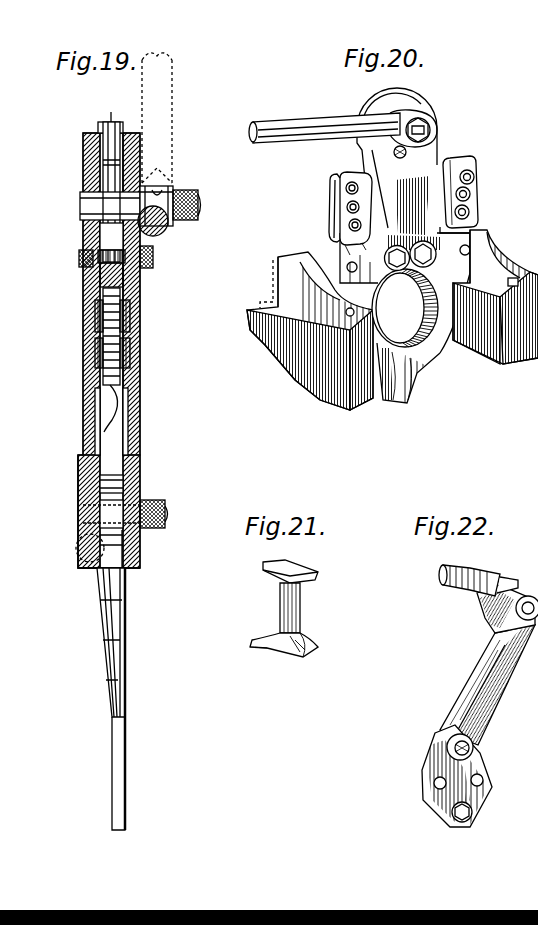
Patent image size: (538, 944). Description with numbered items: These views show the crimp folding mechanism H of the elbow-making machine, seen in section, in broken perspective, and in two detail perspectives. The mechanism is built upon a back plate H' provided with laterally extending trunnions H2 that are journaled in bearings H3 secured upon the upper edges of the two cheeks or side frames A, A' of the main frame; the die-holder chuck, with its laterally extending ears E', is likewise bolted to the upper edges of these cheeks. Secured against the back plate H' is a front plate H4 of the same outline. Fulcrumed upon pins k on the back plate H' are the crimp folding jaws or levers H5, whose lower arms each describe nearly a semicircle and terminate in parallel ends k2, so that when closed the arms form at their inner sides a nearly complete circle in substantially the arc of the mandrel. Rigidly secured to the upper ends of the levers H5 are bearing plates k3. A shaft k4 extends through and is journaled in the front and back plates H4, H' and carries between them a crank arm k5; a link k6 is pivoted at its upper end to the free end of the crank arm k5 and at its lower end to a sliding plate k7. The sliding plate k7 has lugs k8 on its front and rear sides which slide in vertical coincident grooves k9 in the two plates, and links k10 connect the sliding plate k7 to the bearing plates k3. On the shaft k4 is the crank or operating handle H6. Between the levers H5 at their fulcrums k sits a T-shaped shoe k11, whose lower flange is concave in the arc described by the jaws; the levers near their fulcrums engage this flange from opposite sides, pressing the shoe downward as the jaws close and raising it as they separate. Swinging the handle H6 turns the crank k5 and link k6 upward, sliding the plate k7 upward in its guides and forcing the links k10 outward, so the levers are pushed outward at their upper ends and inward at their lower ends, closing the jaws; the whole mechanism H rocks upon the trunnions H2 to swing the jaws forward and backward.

In FIG. 20, the crimp folding mechanism H is at (422, 220).
In FIG. 19, the back plate H' is at (86, 350).
In FIG. 19, the trunnions H2 is at (86, 499).
In FIG. 20, the trunnions H2 is at (302, 247).
In FIG. 20, the bearings H3 is at (294, 278).
In FIG. 19, the front plate H4 is at (141, 311).
In FIG. 19, the crimp folding jaws or levers H5 is at (125, 675).
In FIG. 20, the crimp folding jaws or levers H5 is at (426, 318).
In FIG. 19, the crank or operating handle H6 is at (164, 122).
In FIG. 20, the crank or operating handle H6 is at (288, 124).
In FIG. 20, the ears E' is at (252, 279).
In FIG. 20, the cheek or side frame A is at (310, 340).
In FIG. 20, the cheek or side frame A' is at (491, 316).
In FIG. 19, the pins k is at (168, 513).
In FIG. 20, the pins k is at (405, 245).
In FIG. 19, the parallel ends k2 is at (119, 810).
In FIG. 20, the parallel ends k2 is at (397, 403).
In FIG. 20, the bearing plates k3 is at (340, 217).
In FIG. 19, the shaft k4 is at (80, 208).
In FIG. 22, the shaft k4 is at (503, 578).
In FIG. 19, the crank arm k5 is at (110, 120).
In FIG. 22, the crank arm k5 is at (485, 603).
In FIG. 22, the link k6 is at (478, 672).
In FIG. 19, the sliding plate k7 is at (104, 432).
In FIG. 22, the sliding plate k7 is at (432, 763).
In FIG. 19, the lugs k8 is at (140, 298).
In FIG. 22, the lugs k8 is at (453, 742).
In FIG. 19, the grooves k9 is at (95, 417).
In FIG. 20, the links k10 is at (437, 172).
In FIG. 21, the T-shaped shoe k11 is at (294, 598).